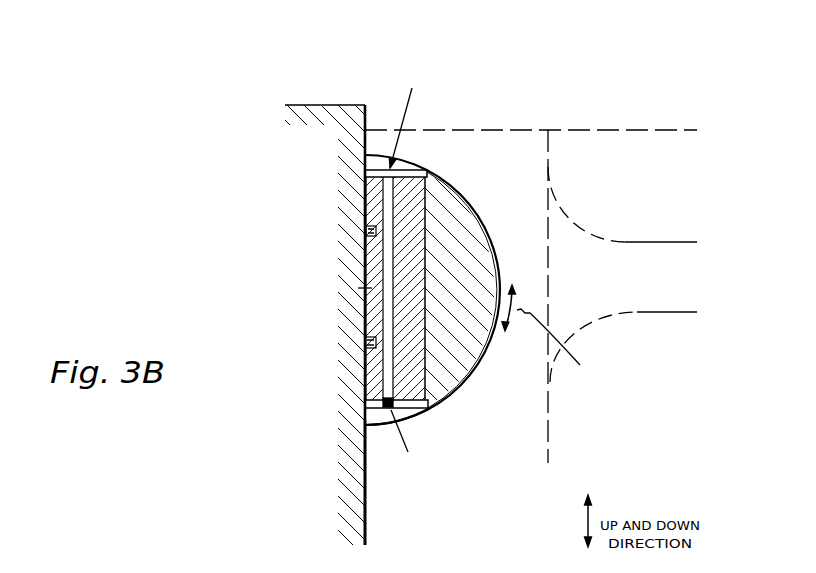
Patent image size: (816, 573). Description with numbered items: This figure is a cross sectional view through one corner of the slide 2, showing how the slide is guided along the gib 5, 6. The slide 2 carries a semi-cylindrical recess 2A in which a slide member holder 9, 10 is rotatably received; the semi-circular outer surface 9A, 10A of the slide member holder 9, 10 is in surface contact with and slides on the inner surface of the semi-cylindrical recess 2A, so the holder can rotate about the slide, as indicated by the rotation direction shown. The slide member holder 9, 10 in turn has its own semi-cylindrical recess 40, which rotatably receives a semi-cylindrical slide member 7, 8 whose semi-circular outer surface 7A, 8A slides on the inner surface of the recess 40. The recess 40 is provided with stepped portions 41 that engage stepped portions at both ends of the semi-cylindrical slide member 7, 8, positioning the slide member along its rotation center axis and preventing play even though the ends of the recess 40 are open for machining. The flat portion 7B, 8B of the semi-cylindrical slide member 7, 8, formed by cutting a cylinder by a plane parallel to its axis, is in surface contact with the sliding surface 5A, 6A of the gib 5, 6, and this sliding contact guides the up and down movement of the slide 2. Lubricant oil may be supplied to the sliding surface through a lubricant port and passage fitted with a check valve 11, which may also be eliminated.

The slide 2 is at (612, 148).
The semi-cylindrical recess 2A is at (505, 241).
The gib 5 is at (406, 325).
The gib 6 is at (355, 455).
The sliding surface 5A is at (433, 482).
The sliding surface 6A is at (368, 470).
The semi-cylindrical slide member 7 is at (393, 251).
The semi-cylindrical slide member 8 is at (415, 200).
The semi-circular outer surface 7A is at (457, 209).
The semi-circular outer surface 8A is at (430, 203).
The flat portion 7B is at (265, 288).
The flat portion 8B is at (360, 193).
The slide member holder 9 is at (608, 230).
The slide member holder 10 is at (477, 238).
The semi-circular outer surface 9A is at (516, 308).
The semi-circular outer surface 10A is at (476, 375).
The check valve 11 is at (365, 240).
The semi-cylindrical recess 40 is at (457, 397).
The stepped portions 41 is at (430, 172).